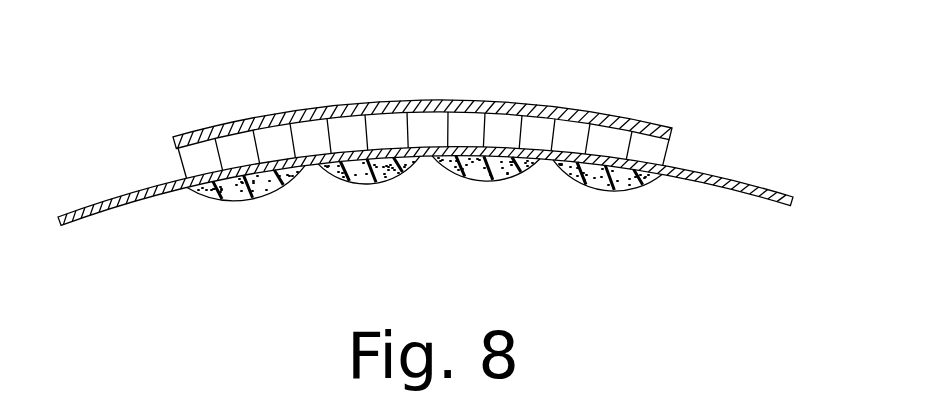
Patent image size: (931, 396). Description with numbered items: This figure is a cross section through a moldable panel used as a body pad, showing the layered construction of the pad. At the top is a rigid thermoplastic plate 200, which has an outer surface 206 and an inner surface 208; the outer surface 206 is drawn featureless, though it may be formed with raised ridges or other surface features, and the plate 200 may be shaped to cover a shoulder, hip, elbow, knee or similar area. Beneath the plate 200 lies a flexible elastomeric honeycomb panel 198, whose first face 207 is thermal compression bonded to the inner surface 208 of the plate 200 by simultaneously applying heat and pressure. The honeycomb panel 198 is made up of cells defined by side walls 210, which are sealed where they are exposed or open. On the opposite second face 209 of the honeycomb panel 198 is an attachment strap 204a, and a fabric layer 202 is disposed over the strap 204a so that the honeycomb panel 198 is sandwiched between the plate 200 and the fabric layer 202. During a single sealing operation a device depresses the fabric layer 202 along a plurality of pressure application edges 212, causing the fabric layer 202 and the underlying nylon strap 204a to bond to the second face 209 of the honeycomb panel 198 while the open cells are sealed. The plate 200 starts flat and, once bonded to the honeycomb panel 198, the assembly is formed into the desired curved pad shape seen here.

The flexible elastomeric honeycomb panel 198 is at (744, 149).
The rigid thermoplastic plate 200 is at (580, 117).
The fabric layer 202 is at (233, 203).
The attachment strap 204a is at (753, 198).
The outer surface 206 is at (422, 103).
The first face 207 is at (178, 160).
The inner surface 208 is at (670, 138).
The second face 209 is at (187, 180).
The side walls 210 is at (188, 163).
The pressure application edges 212 is at (309, 168).